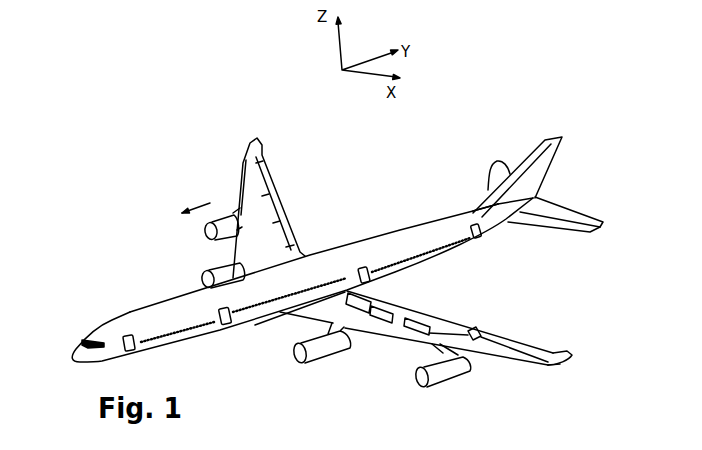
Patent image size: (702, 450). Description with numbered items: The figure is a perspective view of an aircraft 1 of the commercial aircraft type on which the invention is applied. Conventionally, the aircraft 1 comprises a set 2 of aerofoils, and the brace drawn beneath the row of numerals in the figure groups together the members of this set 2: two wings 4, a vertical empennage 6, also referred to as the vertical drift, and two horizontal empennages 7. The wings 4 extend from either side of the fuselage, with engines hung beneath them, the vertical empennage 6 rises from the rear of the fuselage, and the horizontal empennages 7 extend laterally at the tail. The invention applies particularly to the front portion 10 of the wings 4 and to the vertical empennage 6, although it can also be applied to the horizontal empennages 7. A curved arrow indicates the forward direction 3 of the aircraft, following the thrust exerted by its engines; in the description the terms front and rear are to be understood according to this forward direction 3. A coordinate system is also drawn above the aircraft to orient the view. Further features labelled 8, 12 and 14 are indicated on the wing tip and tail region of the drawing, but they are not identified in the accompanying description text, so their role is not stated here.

The aircraft 1 is at (213, 115).
The set of aerofoils 2 is at (568, 301).
The forward direction 3 is at (210, 203).
The wings 4 is at (403, 320).
The vertical empennage 6 is at (494, 211).
The horizontal empennages 7 is at (481, 185).
The wing tip 8 is at (523, 357).
The front portion 10 is at (402, 341).
The tail fairing 12 is at (518, 166).
The vertical stabilizer 14 is at (505, 202).